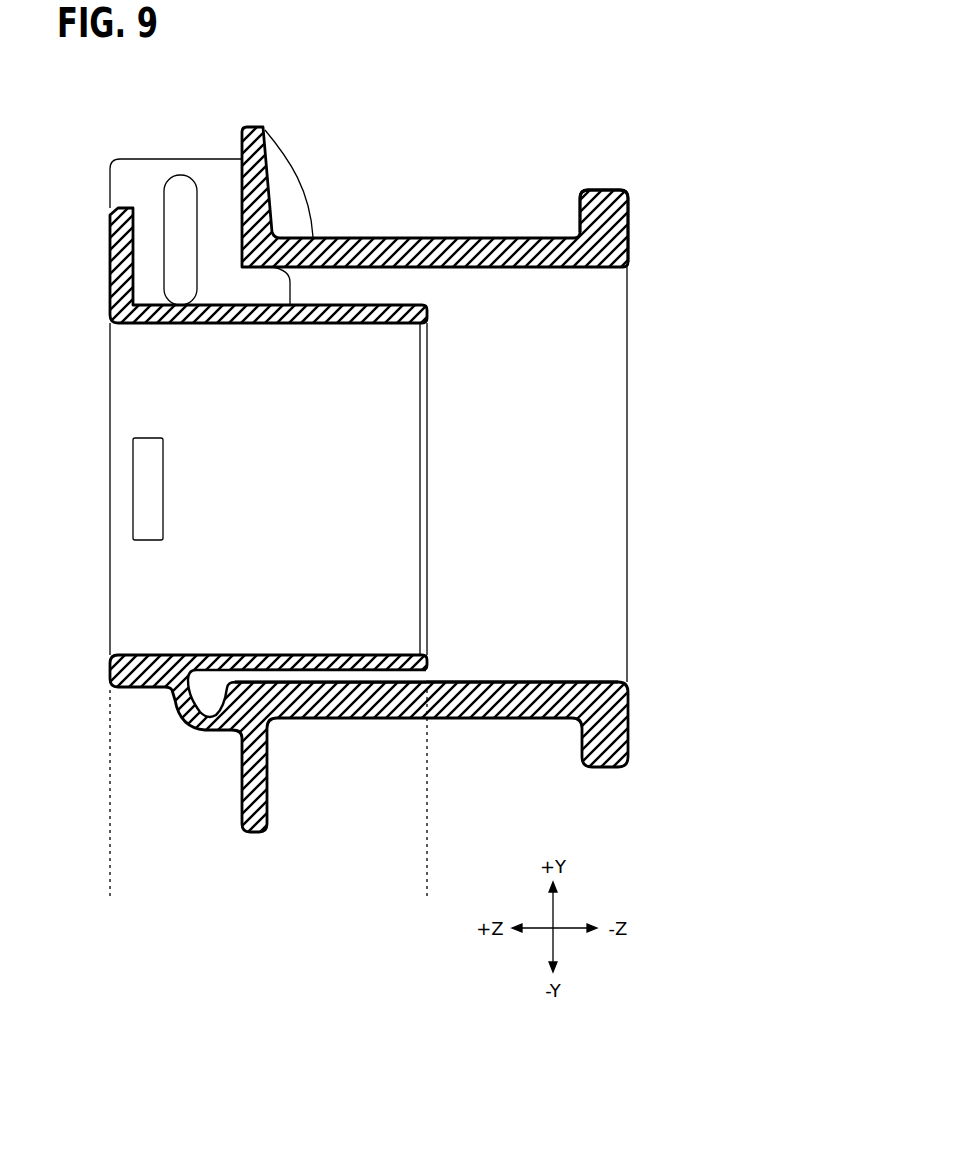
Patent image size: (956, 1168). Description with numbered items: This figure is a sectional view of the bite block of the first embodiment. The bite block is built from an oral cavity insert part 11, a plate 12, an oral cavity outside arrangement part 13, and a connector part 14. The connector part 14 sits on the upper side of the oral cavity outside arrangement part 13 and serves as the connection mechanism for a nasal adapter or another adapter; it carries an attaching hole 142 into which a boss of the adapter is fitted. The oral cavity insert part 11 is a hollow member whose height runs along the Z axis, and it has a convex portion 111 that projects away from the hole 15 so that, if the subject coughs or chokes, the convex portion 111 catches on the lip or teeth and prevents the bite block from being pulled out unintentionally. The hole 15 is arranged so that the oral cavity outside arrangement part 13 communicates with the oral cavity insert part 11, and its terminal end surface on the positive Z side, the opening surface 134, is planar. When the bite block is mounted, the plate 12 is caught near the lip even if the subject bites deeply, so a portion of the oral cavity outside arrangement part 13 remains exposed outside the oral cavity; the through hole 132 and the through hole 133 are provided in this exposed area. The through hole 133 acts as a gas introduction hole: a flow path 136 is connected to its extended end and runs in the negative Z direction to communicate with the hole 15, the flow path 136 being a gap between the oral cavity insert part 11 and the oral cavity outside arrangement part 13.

The oral cavity insert part 11 is at (642, 773).
The plate 12 is at (283, 177).
The oral cavity outside arrangement part 13 is at (112, 870).
The connector part 14 is at (120, 170).
The hole 15 is at (372, 408).
The convex portion 111 is at (607, 192).
The through hole 132 is at (150, 490).
The through hole 133 is at (213, 683).
The opening surface 134 is at (110, 581).
The flow path 136 is at (400, 678).
The attaching hole 142 is at (177, 177).